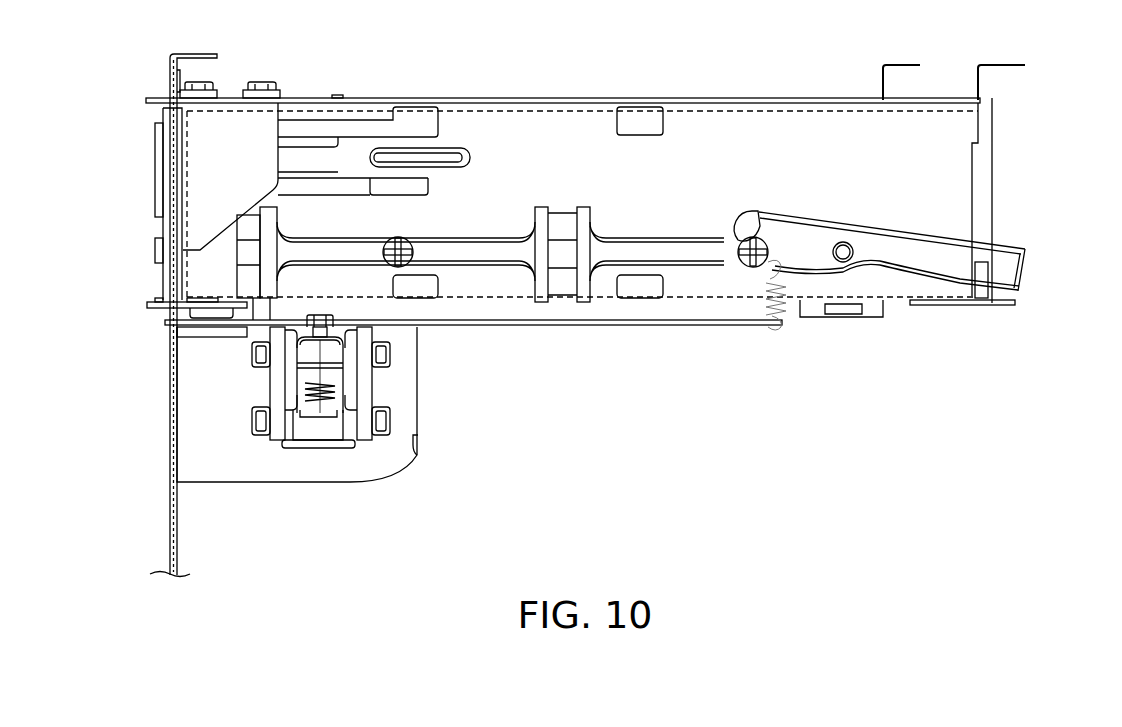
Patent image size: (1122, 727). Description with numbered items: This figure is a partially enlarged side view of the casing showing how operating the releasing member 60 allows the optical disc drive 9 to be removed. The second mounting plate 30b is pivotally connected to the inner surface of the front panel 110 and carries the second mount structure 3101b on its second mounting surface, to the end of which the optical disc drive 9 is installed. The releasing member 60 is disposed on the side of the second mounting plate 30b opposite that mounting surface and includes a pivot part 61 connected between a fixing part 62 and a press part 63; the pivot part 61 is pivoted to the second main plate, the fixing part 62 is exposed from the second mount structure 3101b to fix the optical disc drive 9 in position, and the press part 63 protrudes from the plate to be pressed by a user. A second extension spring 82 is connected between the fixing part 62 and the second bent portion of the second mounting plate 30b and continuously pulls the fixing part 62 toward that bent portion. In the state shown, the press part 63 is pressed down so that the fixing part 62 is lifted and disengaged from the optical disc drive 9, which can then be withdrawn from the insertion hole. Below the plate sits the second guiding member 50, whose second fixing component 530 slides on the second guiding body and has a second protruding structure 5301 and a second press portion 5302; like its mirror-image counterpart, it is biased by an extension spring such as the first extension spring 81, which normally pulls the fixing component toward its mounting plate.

The front panel 110 is at (170, 79).
The optical disc drive 9 is at (165, 228).
The second protruding structure 5301 is at (317, 313).
The first extension spring 81 is at (300, 390).
The second fixing component 530 is at (277, 442).
The second press portion 5302 is at (313, 449).
The second guiding member 50 is at (384, 484).
The second mounting plate 30b is at (613, 328).
The second mount structure 3101b is at (683, 248).
The second extension spring 82 is at (773, 303).
The fixing part 62 is at (751, 212).
The pivot part 61 is at (877, 231).
The releasing member 60 is at (902, 228).
The press part 63 is at (1018, 251).